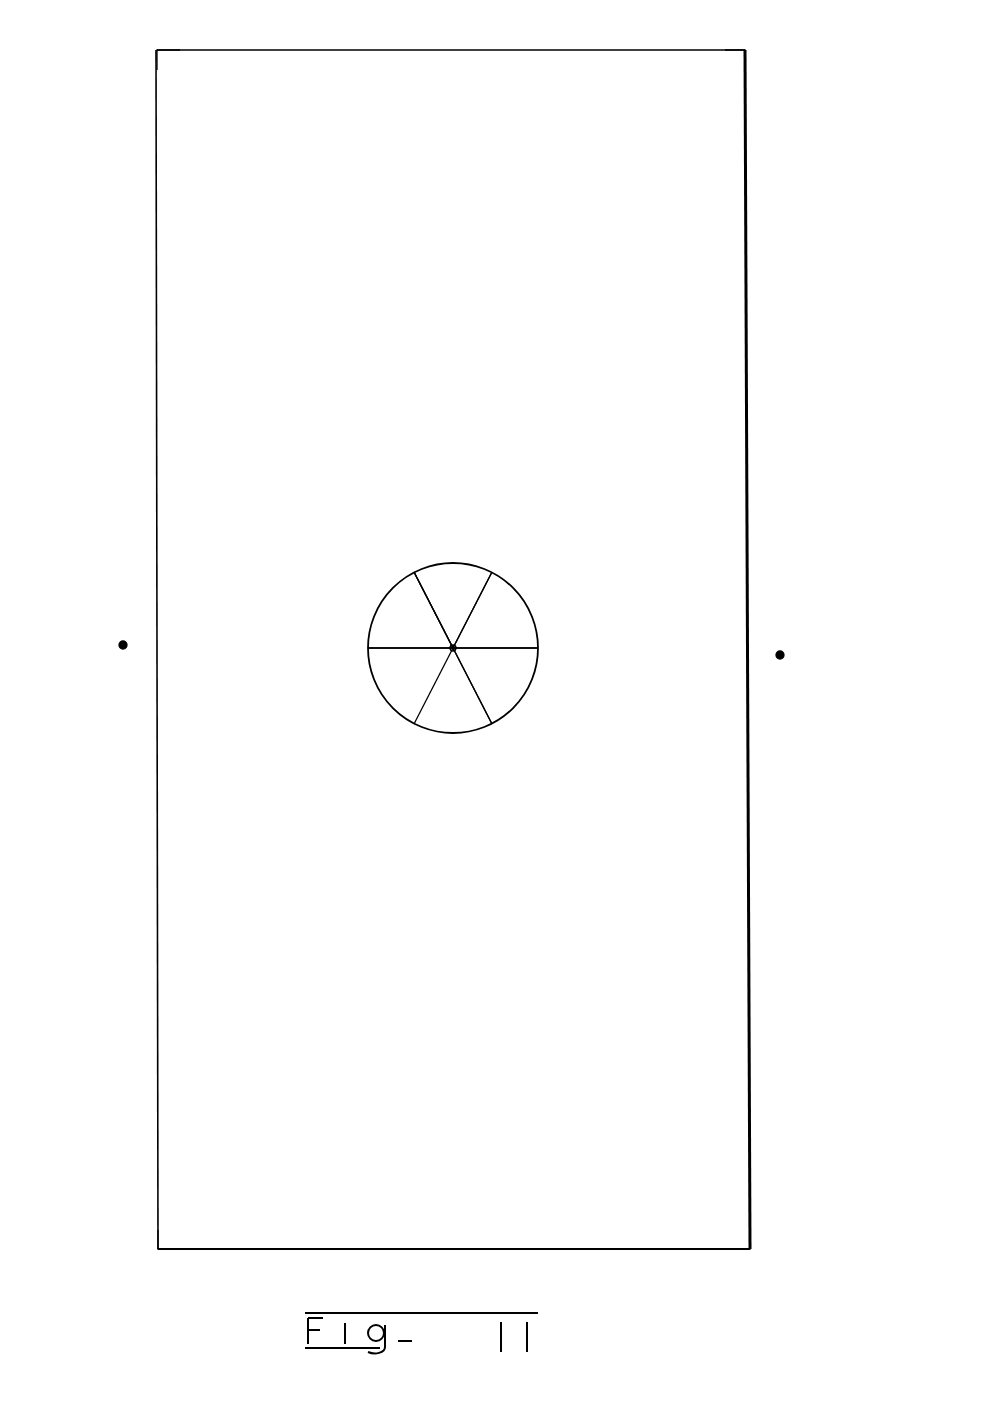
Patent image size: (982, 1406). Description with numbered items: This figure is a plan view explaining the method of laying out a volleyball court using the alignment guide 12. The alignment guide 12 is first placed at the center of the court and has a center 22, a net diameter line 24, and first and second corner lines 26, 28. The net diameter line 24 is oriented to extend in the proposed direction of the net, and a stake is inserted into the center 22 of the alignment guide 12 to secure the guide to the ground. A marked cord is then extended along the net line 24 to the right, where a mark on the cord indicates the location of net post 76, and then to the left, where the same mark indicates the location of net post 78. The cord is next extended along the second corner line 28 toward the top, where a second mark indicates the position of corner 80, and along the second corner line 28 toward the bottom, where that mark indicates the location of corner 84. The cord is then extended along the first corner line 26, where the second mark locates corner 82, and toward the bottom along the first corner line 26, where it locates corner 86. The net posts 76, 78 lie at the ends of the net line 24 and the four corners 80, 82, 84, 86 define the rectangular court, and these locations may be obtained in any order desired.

The alignment guide 12 is at (479, 746).
The center 22 is at (453, 648).
The net diameter line 24 is at (513, 652).
The first corner line 26 is at (481, 597).
The second corner line 28 is at (413, 598).
The net post 76 is at (780, 655).
The net post 78 is at (123, 645).
The corner 80 is at (157, 50).
The corner 82 is at (745, 50).
The corner 84 is at (750, 1250).
The corner 86 is at (158, 1250).